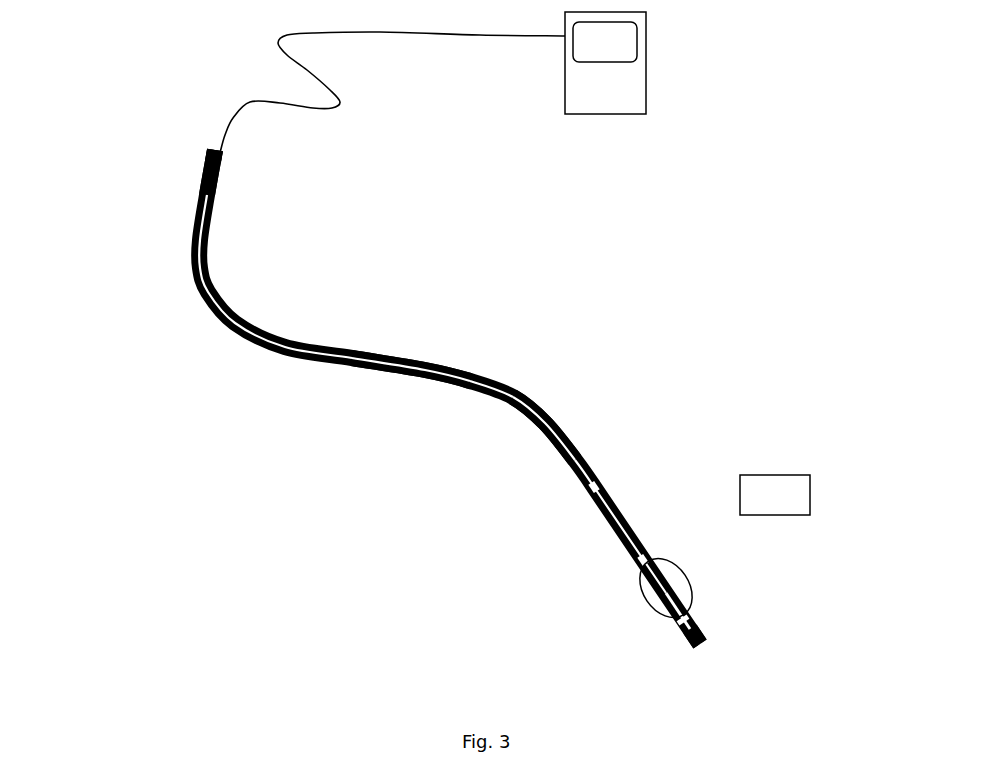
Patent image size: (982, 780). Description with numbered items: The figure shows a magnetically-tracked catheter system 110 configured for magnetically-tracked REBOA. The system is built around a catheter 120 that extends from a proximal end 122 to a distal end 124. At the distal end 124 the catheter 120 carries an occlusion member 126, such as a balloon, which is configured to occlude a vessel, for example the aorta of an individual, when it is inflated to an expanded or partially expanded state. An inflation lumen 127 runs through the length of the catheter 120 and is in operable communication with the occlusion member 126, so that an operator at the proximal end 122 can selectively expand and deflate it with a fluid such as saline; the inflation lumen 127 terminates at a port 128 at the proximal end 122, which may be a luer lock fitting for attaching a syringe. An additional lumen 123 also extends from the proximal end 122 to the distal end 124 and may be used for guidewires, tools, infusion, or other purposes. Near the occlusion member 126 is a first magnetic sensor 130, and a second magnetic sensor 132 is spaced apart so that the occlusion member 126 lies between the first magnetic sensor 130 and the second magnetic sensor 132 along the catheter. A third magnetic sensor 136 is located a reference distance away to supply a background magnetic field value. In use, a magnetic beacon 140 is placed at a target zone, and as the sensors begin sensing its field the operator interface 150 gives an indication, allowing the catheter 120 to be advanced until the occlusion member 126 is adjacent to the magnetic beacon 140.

The magnetically-tracked catheter system 110 is at (118, 39).
The catheter 120 is at (403, 360).
The proximal end 122 is at (240, 160).
The additional lumen 123 is at (513, 398).
The distal end 124 is at (713, 656).
The occlusion member 126 is at (645, 587).
The inflation lumen 127 is at (423, 377).
The port 128 is at (214, 157).
The first magnetic sensor 130 is at (683, 623).
The second magnetic sensor 132 is at (641, 557).
The third magnetic sensor 136 is at (590, 493).
The magnetic beacon 140 is at (792, 506).
The operator interface 150 is at (646, 72).